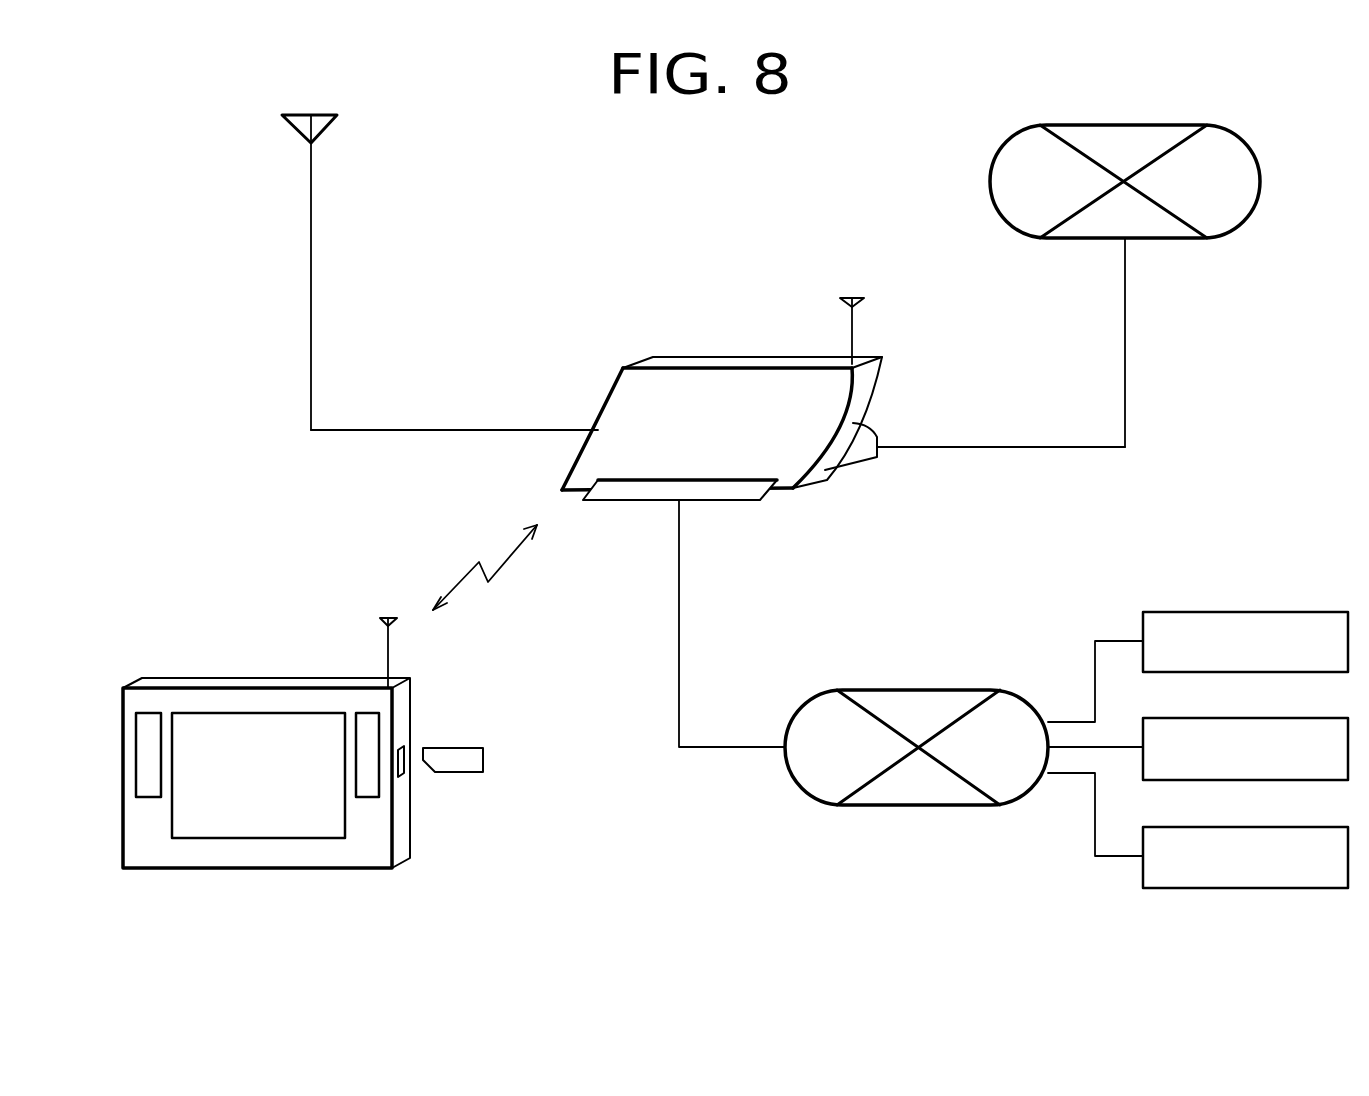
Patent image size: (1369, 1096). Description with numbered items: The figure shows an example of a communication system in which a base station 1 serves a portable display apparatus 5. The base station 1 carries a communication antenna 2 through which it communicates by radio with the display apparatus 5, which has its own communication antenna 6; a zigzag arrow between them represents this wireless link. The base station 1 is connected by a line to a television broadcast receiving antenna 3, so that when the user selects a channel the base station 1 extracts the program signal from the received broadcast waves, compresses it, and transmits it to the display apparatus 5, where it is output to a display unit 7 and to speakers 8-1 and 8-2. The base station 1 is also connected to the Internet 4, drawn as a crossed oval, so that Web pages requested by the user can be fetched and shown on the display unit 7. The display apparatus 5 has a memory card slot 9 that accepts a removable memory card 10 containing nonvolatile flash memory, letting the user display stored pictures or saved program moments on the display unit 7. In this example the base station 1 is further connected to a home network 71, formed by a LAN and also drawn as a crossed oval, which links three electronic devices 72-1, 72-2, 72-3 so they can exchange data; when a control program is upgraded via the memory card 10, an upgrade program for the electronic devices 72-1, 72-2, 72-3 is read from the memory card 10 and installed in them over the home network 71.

The base station 1 is at (623, 378).
The communication antenna 2 is at (851, 298).
The television broadcast receiving antenna 3 is at (292, 131).
The Internet 4 is at (1172, 245).
The display apparatus 5 is at (308, 850).
The communication antenna 6 is at (383, 617).
The display unit 7 is at (211, 813).
The speaker 8-1 is at (145, 727).
The speaker 8-2 is at (363, 717).
The memory card slot 9 is at (405, 770).
The memory card 10 is at (455, 753).
The home network 71 is at (920, 808).
The electronic device 72-1 is at (1227, 612).
The electronic device 72-2 is at (1227, 718).
The electronic device 72-3 is at (1227, 827).